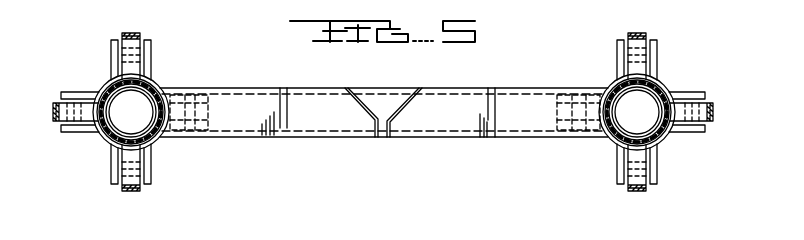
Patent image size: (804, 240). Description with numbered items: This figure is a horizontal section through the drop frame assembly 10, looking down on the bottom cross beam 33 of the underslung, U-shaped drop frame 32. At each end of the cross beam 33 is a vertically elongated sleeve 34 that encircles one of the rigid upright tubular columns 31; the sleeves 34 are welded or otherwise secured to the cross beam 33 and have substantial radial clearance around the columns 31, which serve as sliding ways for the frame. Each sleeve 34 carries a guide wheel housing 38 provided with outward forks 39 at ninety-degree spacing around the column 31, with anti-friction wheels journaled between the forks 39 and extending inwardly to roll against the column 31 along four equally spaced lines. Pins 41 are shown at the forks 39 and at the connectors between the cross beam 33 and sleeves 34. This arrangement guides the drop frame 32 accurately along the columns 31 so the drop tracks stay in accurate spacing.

The frame assembly 10 is at (564, 152).
The tubular column 31 is at (668, 142).
The drop frame 32 is at (373, 142).
The bottom cross beam 33 is at (520, 127).
The sleeve 34 is at (660, 89).
The guide wheel housing 38 is at (620, 146).
The fork 39 is at (151, 177).
The fastening pin 41 is at (133, 37).